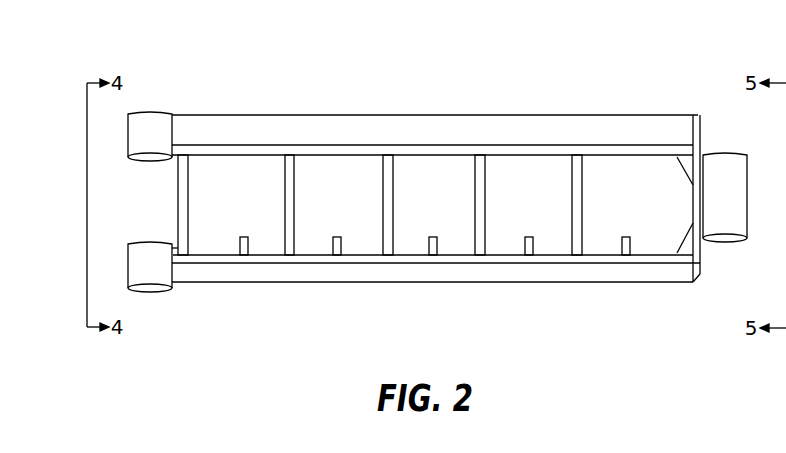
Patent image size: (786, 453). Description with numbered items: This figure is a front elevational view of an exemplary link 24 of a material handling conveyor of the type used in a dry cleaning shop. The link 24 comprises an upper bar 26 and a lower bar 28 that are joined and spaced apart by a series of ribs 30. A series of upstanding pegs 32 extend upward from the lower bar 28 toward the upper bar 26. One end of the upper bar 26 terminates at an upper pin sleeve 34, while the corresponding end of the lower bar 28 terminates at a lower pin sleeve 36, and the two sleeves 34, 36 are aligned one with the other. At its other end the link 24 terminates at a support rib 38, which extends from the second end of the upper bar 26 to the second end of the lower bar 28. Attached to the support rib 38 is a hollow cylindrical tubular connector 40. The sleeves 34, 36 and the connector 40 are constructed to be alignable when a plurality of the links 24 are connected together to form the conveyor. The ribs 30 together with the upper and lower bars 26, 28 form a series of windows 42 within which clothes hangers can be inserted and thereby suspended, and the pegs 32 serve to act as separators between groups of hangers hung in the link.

The link 24 is at (412, 97).
The upper bar 26 is at (538, 114).
The lower bar 28 is at (642, 283).
The ribs 30 is at (288, 232).
The upstanding pegs 32 is at (533, 245).
The upper pin sleeve 34 is at (145, 134).
The lower pin sleeve 36 is at (145, 262).
The support rib 38 is at (700, 153).
The hollow cylindrical tubular connector 40 is at (732, 193).
The windows 42 is at (225, 183).